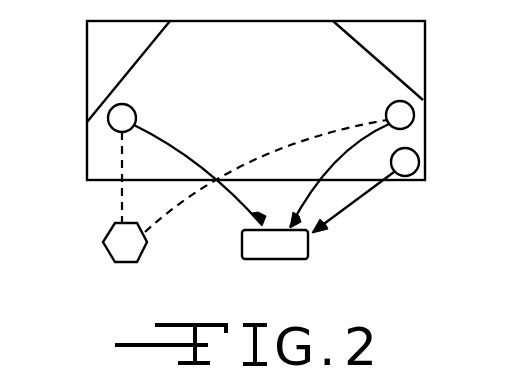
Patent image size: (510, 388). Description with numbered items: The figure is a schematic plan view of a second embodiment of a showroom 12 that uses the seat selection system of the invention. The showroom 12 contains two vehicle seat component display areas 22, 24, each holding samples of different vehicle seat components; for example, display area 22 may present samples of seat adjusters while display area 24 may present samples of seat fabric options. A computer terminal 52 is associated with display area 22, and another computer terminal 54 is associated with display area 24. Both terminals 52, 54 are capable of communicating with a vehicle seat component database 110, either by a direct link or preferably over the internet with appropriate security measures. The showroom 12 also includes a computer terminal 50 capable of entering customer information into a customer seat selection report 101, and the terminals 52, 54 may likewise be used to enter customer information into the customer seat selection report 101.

The showroom 12 is at (259, 57).
The vehicle seat component display area 22 is at (127, 56).
The vehicle seat component display area 24 is at (409, 56).
The computer terminal 52 is at (136, 116).
The computer terminal 54 is at (392, 104).
The computer terminal 50 is at (409, 150).
The vehicle seat component database 110 is at (108, 232).
The customer seat selection report 101 is at (308, 246).